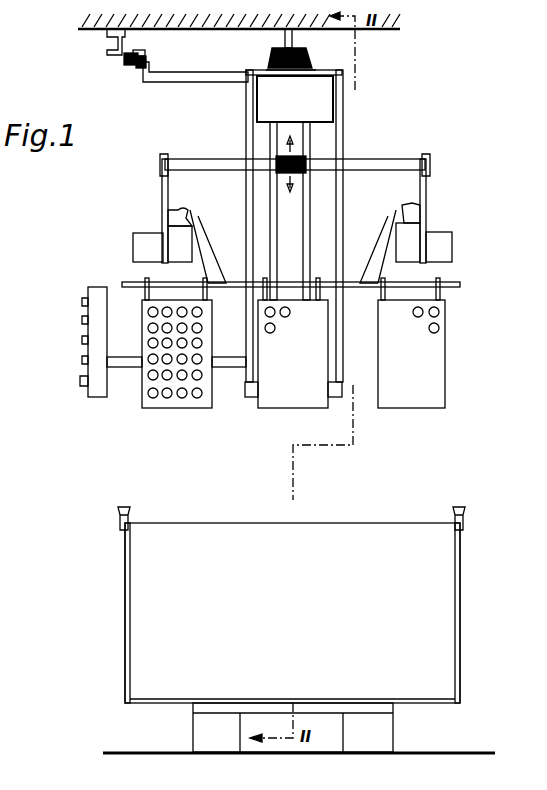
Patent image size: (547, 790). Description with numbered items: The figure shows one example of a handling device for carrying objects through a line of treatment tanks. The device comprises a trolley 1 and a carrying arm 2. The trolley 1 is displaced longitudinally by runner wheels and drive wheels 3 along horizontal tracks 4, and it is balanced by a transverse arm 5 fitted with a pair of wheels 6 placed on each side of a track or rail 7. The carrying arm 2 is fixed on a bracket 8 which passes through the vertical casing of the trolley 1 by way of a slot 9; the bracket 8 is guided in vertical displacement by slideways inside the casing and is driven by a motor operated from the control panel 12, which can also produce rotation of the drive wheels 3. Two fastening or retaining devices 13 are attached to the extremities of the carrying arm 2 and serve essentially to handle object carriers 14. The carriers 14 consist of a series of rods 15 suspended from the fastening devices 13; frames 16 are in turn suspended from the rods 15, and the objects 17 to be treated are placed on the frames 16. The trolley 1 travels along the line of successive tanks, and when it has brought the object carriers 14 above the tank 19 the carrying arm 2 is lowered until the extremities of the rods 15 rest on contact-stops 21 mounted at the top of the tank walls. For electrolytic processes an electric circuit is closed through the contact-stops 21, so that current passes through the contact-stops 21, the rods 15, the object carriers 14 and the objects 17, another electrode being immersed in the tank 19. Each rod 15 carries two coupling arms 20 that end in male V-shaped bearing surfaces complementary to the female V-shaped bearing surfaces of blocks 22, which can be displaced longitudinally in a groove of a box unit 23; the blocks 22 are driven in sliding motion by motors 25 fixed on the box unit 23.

The trolley 1 is at (320, 101).
The carrying arm 2 is at (386, 164).
The drive wheels 3 is at (302, 52).
The horizontal tracks 4 is at (284, 40).
The transverse arm 5 is at (196, 78).
The wheels 6 is at (140, 58).
The track or rail 7 is at (110, 40).
The bracket 8 is at (304, 160).
The slot 9 is at (304, 232).
The control panel 12 is at (95, 328).
The fastening or retaining devices 13 is at (162, 195).
The object carriers 14 is at (448, 350).
The rods 15 is at (357, 300).
The frames 16 is at (398, 410).
The objects 17 is at (200, 406).
The tank 19 is at (440, 606).
The coupling arms 20 is at (210, 246).
The contact-stops 21 is at (124, 508).
The blocks 22 is at (180, 214).
The box unit 23 is at (410, 238).
The motors 25 is at (142, 252).